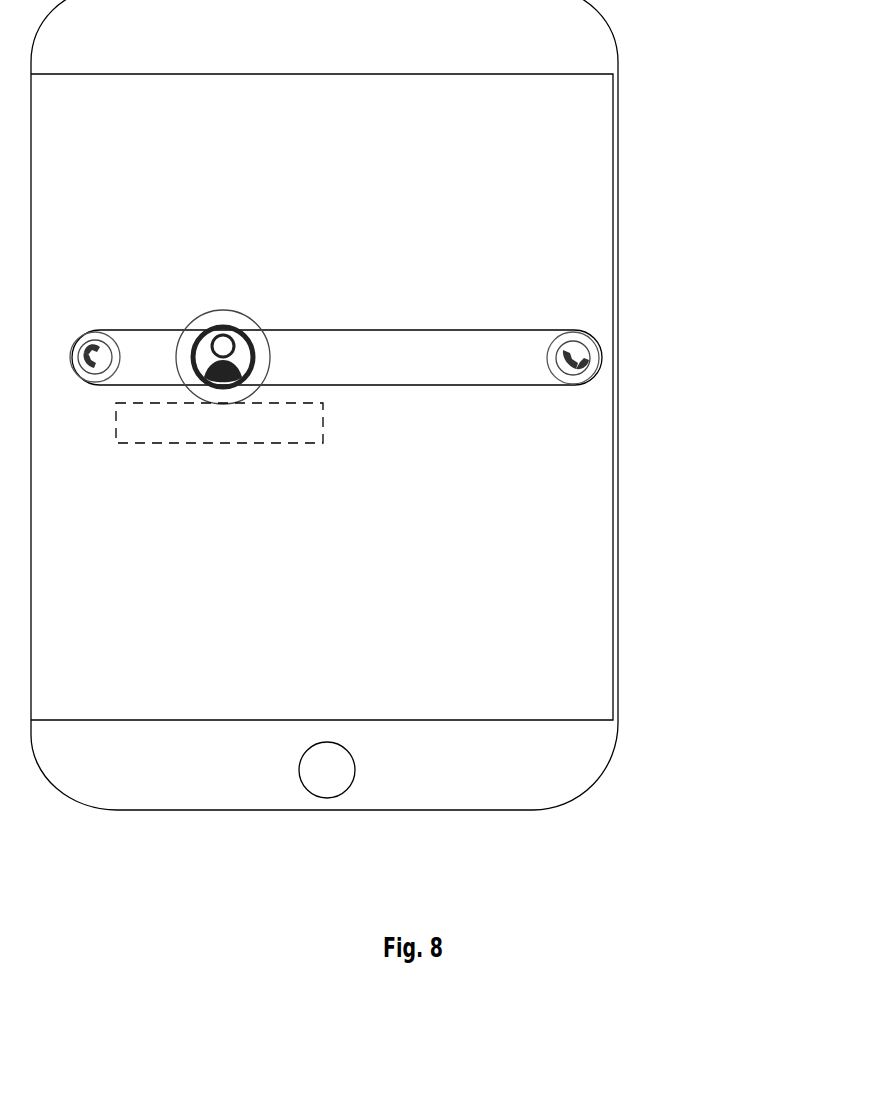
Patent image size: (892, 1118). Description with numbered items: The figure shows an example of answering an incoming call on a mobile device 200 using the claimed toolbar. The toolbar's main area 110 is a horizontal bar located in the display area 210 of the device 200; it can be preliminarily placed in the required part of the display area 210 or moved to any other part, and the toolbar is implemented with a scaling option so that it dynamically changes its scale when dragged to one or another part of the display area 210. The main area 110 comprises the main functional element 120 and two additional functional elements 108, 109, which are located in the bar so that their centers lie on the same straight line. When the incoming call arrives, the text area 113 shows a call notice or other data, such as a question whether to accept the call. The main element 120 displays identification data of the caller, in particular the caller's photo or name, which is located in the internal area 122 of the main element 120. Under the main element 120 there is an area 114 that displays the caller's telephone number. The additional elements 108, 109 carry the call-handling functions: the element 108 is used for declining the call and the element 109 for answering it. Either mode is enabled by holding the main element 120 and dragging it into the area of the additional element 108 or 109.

The mobile device 200 is at (618, 174).
The display area 210 is at (588, 566).
The main area 110 is at (360, 330).
The additional functional element 108 is at (95, 340).
The additional functional element 109 is at (565, 340).
The text area 113 is at (413, 372).
The area displaying the caller telephone number 114 is at (293, 445).
The main functional element 120 is at (222, 316).
The internal area 122 is at (202, 337).